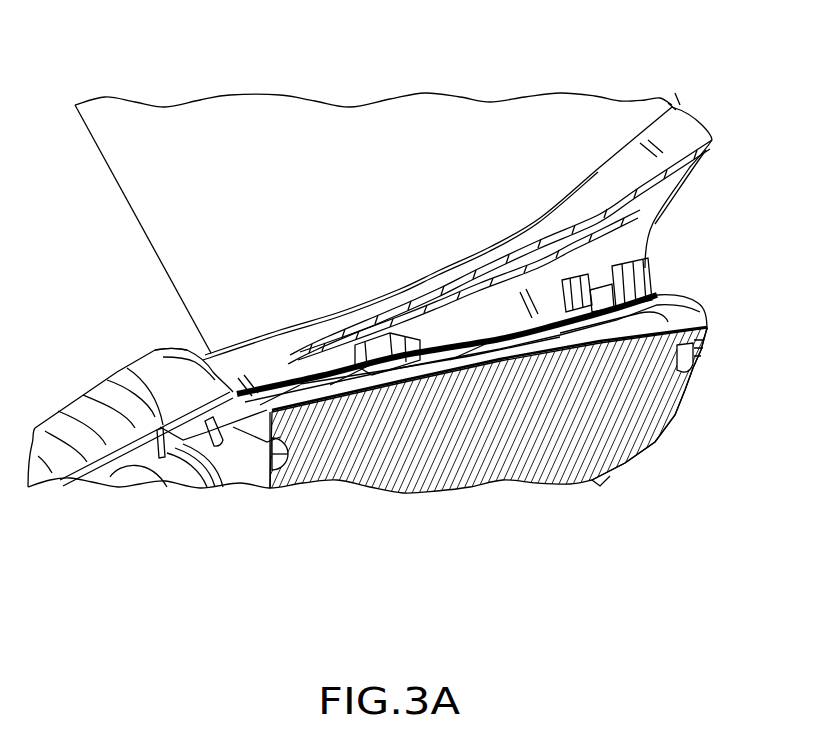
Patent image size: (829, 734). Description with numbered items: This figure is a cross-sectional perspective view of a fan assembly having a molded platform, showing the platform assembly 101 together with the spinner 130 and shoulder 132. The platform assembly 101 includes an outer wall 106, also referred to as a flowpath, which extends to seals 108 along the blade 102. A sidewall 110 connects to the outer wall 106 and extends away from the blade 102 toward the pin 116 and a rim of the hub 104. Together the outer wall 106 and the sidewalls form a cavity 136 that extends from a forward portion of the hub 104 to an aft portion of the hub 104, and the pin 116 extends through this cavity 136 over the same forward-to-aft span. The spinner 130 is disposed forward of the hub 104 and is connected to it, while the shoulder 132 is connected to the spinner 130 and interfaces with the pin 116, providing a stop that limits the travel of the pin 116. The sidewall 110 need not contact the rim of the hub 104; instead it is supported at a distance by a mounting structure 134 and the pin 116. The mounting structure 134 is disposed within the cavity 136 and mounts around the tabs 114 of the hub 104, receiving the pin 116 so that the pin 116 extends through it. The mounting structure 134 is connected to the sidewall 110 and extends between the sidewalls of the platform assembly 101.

The platform assembly 101 is at (516, 162).
The blade 102 is at (127, 165).
The hub 104 is at (666, 416).
The outer wall 106 is at (690, 126).
The seals 108 is at (675, 94).
The sidewall 110 is at (635, 231).
The tabs 114 is at (603, 297).
The pin 116 is at (510, 350).
The spinner 130 is at (130, 380).
The shoulder 132 is at (185, 352).
The mounting structure 134 is at (645, 276).
The cavity 136 is at (690, 204).